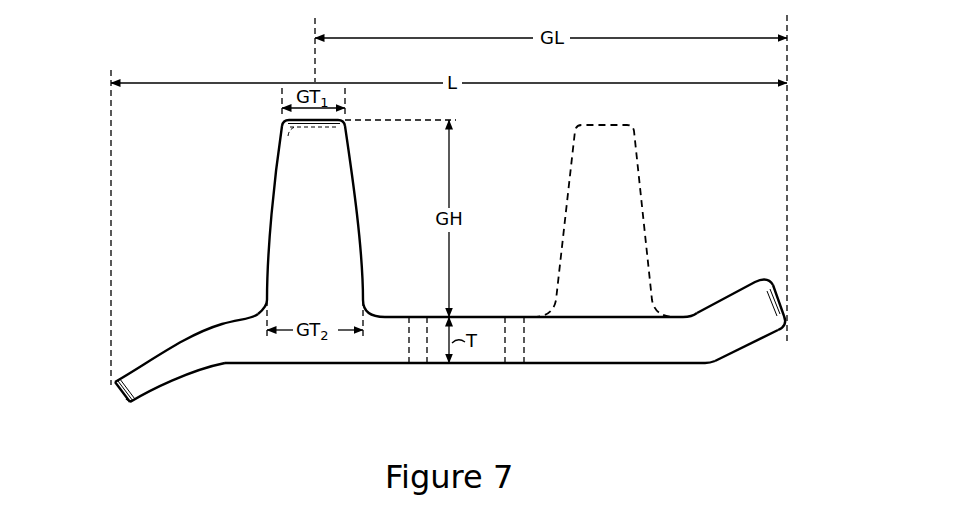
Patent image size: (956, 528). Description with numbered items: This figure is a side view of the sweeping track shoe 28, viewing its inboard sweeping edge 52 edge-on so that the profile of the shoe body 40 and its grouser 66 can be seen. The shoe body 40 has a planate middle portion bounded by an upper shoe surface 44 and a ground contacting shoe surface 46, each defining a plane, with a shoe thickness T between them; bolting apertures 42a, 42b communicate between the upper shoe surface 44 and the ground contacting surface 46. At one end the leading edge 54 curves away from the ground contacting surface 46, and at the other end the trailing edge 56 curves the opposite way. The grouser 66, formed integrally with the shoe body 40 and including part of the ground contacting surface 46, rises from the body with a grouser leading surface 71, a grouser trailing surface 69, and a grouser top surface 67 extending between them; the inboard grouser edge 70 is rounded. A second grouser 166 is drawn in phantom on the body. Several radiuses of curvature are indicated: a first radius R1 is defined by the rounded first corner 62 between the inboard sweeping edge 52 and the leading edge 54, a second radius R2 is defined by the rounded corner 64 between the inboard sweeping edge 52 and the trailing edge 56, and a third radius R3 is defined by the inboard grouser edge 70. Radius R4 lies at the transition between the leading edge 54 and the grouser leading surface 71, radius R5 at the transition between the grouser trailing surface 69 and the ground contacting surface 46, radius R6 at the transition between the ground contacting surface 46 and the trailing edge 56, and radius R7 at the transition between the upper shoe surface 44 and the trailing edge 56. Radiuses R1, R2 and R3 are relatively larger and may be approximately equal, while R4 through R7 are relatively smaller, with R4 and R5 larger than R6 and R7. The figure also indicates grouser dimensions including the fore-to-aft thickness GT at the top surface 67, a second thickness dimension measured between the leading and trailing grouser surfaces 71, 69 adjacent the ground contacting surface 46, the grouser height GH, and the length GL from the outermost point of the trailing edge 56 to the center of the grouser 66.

The sweeping track shoe 28 is at (94, 193).
The shoe body 40 is at (152, 361).
The leading edge 54 is at (112, 391).
The first corner 62 is at (126, 410).
The first radius R1 is at (119, 404).
The radius R4 is at (255, 303).
The grouser leading surface 71 is at (274, 183).
The third radius R3 is at (296, 127).
The grouser top surface 67 is at (298, 119).
The inboard grouser edge 70 is at (339, 128).
The grouser 66 is at (355, 184).
The grouser trailing surface 69 is at (358, 169).
The radius R5 is at (374, 306).
The ground contacting shoe surface 46 is at (490, 314).
The bolting aperture 42a is at (409, 364).
The bolting aperture 42b is at (524, 364).
The upper shoe surface 44 is at (486, 365).
The inboard sweeping edge 52 is at (610, 350).
The radius R6 is at (683, 313).
The trailing edge 56 is at (778, 290).
The second radius R2 is at (790, 295).
The corner 64 is at (786, 326).
The radius R7 is at (706, 366).
The second grouser 166 is at (642, 183).